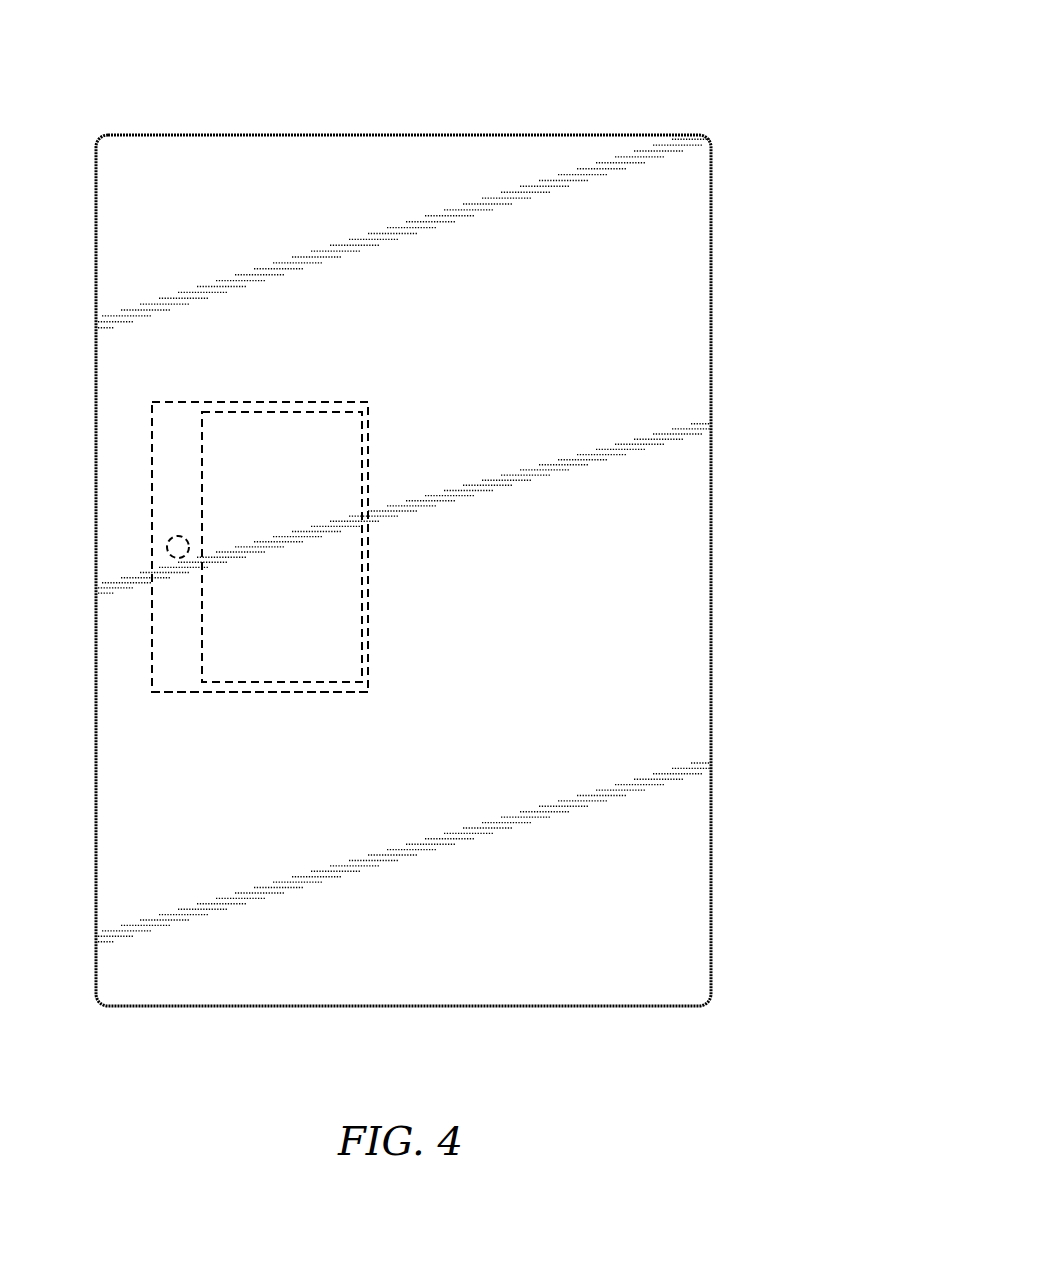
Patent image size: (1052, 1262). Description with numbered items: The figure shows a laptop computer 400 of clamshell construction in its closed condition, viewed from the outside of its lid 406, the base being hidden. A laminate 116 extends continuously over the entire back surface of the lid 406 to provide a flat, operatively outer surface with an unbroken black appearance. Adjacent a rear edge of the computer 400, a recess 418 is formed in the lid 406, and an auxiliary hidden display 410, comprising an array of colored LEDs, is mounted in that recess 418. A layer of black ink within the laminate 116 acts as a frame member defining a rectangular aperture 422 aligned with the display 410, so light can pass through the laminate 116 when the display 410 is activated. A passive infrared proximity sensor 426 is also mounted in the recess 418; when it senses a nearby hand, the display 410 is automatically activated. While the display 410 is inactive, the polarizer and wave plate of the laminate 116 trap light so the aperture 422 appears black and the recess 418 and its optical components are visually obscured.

The laptop computer 400 is at (417, 507).
The lid 406 is at (665, 882).
The laminate 116 is at (579, 361).
The recess 418 is at (219, 401).
The auxiliary hidden display 410 is at (298, 423).
The rectangular aperture 422 is at (243, 691).
The passive infrared proximity sensor 426 is at (166, 546).